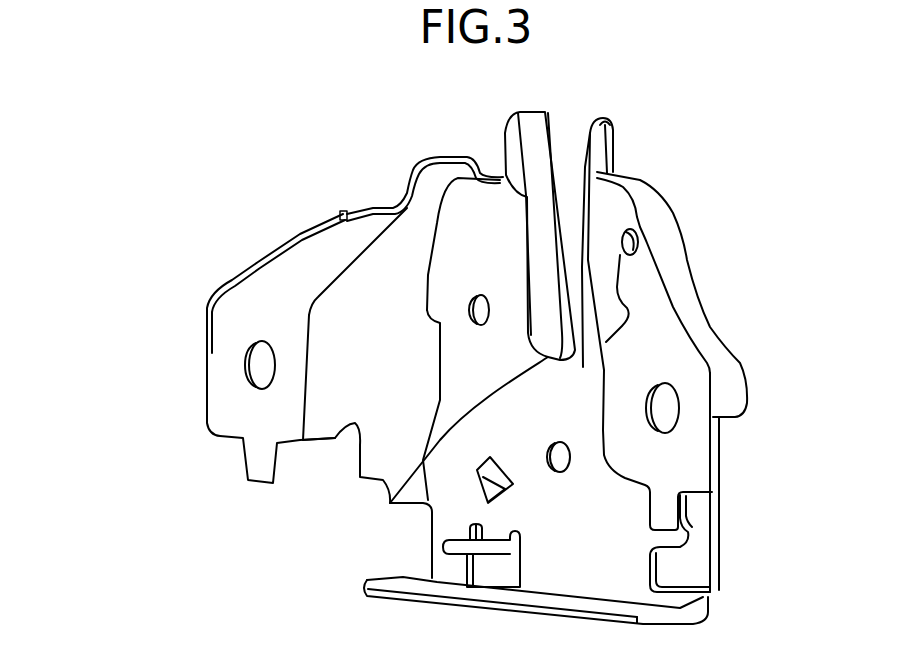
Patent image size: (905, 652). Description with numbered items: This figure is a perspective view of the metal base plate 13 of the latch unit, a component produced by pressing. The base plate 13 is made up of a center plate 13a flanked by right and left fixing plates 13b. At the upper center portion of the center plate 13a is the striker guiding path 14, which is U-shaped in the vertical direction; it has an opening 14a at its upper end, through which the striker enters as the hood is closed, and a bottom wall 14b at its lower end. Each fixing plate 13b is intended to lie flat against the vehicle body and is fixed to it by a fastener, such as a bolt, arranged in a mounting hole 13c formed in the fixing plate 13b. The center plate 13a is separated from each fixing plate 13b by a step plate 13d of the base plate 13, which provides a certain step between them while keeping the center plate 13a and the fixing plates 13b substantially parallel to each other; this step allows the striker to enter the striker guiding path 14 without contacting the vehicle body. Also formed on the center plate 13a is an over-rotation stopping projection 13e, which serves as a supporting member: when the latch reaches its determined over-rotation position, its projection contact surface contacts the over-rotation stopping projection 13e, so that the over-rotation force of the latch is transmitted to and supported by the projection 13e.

The base plate 13 is at (662, 207).
The center plate 13a is at (480, 263).
The fixing plate 13b is at (247, 320).
The mounting hole 13c is at (258, 365).
The step plate 13d is at (368, 377).
The over-rotation stopping projection 13e is at (432, 530).
The striker guiding path 14 is at (565, 205).
The opening 14a is at (570, 122).
The bottom wall 14b is at (490, 487).